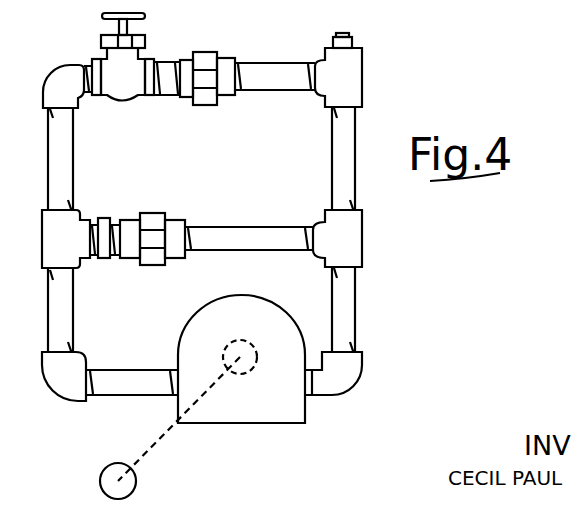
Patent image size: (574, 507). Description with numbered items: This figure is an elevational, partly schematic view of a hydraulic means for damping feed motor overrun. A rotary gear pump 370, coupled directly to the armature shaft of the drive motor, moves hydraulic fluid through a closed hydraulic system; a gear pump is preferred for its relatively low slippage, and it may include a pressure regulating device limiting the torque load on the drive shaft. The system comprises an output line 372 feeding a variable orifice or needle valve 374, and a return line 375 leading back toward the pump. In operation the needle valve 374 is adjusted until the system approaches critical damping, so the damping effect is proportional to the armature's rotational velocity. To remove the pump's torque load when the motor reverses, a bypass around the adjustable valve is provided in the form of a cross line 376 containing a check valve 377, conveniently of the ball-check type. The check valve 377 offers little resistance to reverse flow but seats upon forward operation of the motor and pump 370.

The rotary gear pump 370 is at (211, 306).
The output line 372 is at (128, 371).
The variable orifice or needle valve 374 is at (127, 99).
The return line 375 is at (331, 126).
The cross line 376 is at (213, 226).
The check valve 377 is at (158, 213).